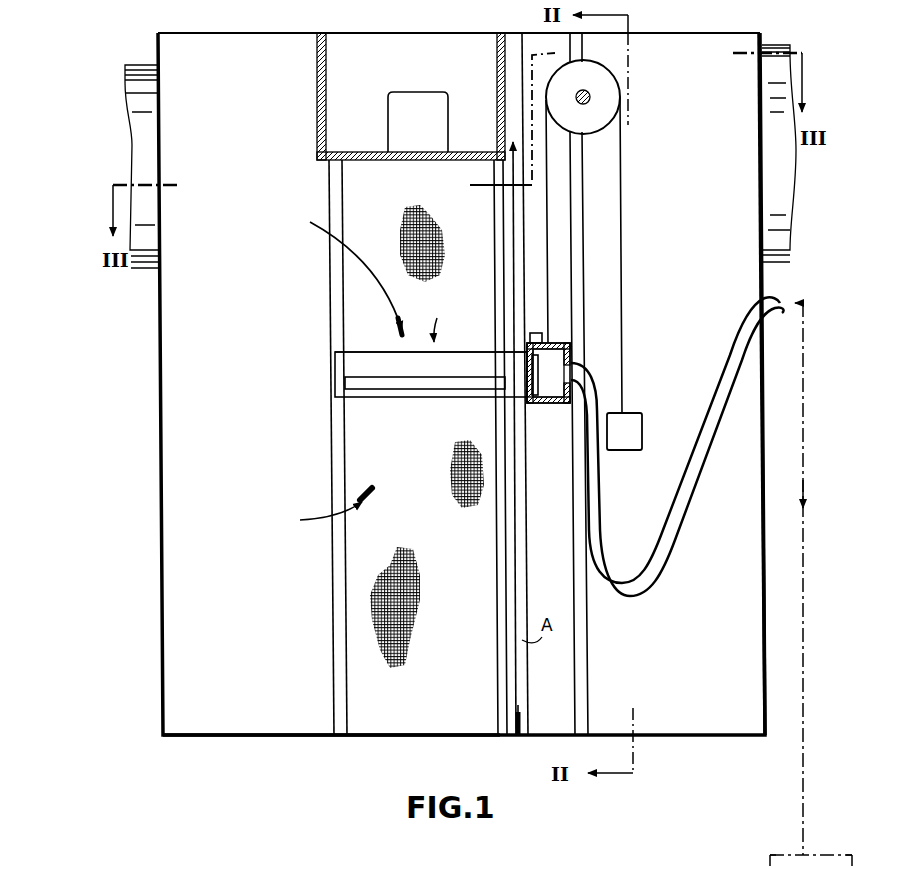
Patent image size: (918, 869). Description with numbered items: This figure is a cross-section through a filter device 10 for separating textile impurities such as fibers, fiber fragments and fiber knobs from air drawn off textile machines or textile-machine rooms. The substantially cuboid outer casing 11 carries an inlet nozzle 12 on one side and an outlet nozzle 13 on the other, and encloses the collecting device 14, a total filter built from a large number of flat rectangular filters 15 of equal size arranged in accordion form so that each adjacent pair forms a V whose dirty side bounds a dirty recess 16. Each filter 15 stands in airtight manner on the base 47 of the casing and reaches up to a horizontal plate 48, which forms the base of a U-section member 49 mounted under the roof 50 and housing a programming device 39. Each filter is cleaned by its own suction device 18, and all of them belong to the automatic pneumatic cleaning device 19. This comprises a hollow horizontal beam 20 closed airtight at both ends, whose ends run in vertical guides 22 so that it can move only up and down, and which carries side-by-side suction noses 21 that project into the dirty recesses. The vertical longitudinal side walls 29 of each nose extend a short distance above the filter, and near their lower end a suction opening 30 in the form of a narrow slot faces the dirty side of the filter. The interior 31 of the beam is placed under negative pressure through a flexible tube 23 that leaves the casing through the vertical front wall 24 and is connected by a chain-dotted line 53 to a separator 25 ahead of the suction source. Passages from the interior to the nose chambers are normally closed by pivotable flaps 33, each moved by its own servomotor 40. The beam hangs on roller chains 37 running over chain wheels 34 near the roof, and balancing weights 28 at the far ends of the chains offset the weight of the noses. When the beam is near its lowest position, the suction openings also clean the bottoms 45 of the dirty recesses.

The filter device 10 is at (262, 770).
The outer casing 11 is at (770, 710).
The inlet nozzle 12 is at (780, 246).
The outlet nozzle 13 is at (135, 70).
The collecting device 14 is at (322, 509).
The filter 15 is at (368, 580).
The dirty recess 16 is at (365, 705).
The suction device 18 is at (374, 362).
The automatic pneumatic cleaning device 19 is at (342, 272).
The beam 20 is at (534, 403).
The suction nose 21 is at (438, 316).
The vertical guide 22 is at (578, 683).
The flexible tube 23 is at (690, 505).
The vertical front wall 24 is at (762, 285).
The separator 25 is at (770, 862).
The balancing weight 28 is at (625, 430).
The vertical longitudinal side wall 29 is at (403, 368).
The suction opening 30 is at (422, 386).
The interior 31 is at (571, 350).
The pivotable flap 33 is at (555, 404).
The chain wheel 34 is at (605, 105).
The roller chain 37 is at (623, 285).
The programming device 39 is at (397, 116).
The servomotor 40 is at (540, 333).
The bottom 45 is at (430, 738).
The base 47 is at (222, 735).
The horizontal plate 48 is at (377, 162).
The U-section member 49 is at (308, 99).
The roof 50 is at (368, 109).
The line 53 is at (806, 382).